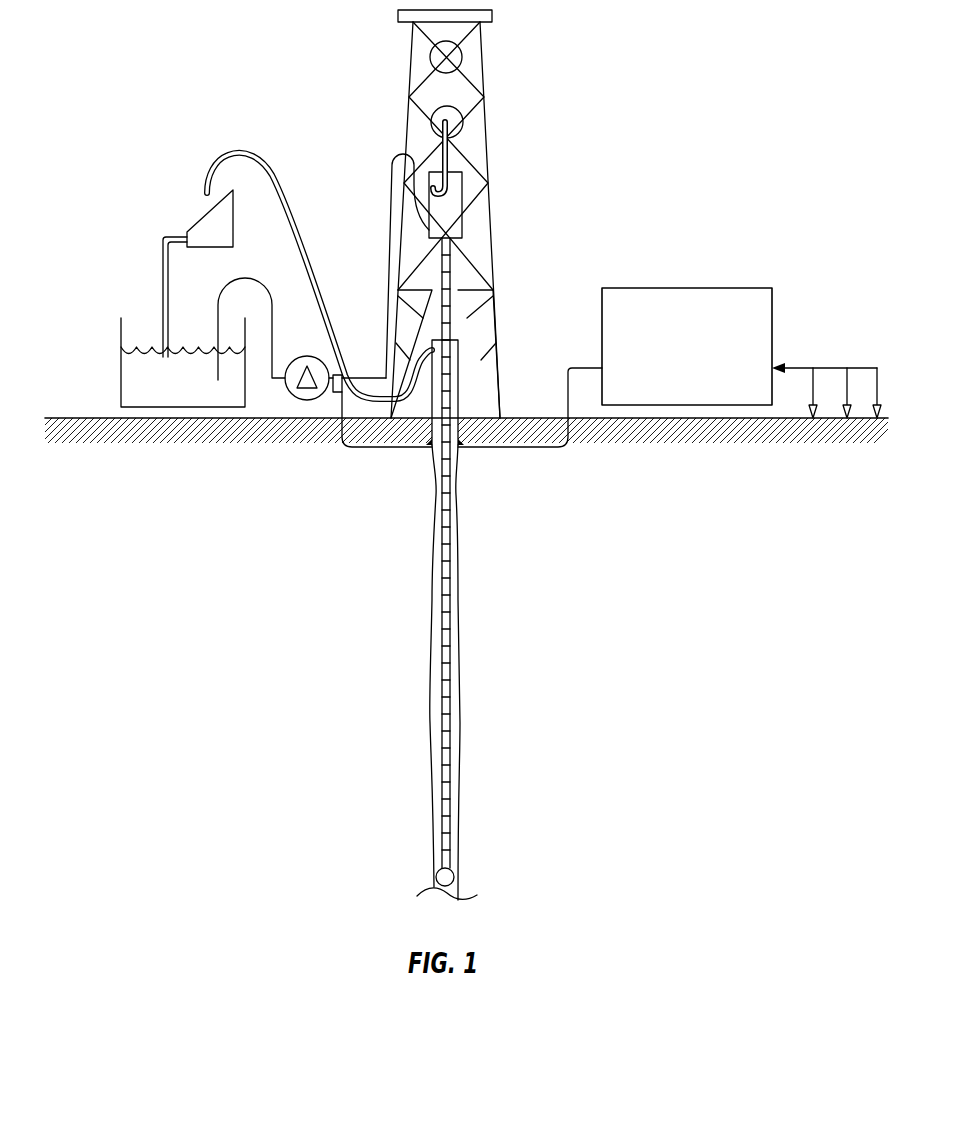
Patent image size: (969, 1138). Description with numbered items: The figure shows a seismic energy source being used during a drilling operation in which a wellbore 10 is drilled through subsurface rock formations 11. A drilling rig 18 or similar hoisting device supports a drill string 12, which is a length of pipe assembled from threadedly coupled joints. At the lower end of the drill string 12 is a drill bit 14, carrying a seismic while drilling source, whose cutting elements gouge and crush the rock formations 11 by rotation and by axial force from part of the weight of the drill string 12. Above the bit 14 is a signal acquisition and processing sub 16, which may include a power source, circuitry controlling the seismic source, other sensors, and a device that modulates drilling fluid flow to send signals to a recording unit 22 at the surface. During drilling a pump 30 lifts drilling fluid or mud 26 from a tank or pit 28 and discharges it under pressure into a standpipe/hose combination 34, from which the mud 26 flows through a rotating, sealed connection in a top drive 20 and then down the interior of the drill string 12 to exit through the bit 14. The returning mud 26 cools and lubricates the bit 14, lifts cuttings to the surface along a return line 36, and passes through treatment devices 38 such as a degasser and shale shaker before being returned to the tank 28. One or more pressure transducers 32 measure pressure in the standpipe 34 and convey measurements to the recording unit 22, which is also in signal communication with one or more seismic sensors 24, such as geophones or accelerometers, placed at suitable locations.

The wellbore 10 is at (432, 771).
The rock formations 11 is at (629, 682).
The drill string 12 is at (456, 552).
The drill bit 14 is at (454, 874).
The signal acquisition and processing sub 16 is at (450, 837).
The drilling rig 18 is at (485, 97).
The top drive 20 is at (450, 217).
The recording unit 22 is at (740, 300).
The seismic sensors 24 is at (809, 414).
The drilling fluid (mud) 26 is at (166, 397).
The tank or pit 28 is at (121, 383).
The pump 30 is at (307, 400).
The pressure transducers 32 is at (338, 400).
The standpipe/hose combination 34 is at (386, 233).
The return line / hose 36 is at (282, 180).
The treatment devices 38 is at (233, 216).